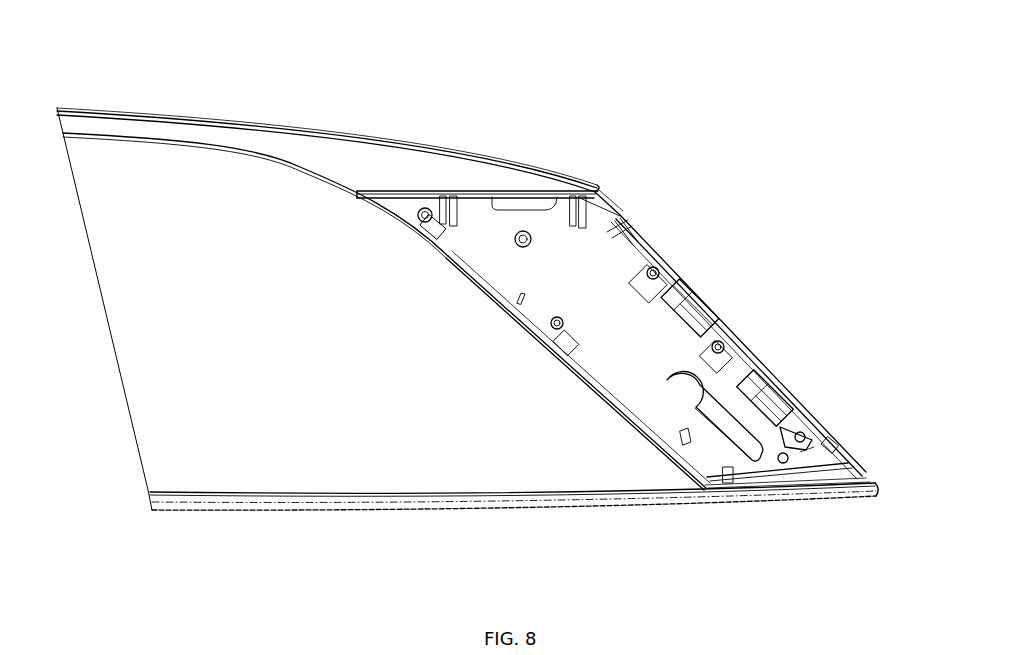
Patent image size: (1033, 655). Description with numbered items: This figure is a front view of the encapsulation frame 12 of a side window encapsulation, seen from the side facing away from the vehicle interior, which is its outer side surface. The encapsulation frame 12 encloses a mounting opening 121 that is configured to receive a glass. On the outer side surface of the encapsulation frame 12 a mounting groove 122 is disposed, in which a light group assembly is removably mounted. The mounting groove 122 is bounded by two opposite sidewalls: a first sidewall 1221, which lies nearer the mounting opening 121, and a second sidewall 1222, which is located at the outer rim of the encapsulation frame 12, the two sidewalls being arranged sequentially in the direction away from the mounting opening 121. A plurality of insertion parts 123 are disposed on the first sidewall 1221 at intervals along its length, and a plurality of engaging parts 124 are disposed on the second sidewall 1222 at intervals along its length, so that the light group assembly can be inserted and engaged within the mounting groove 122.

The encapsulation frame 12 is at (315, 130).
The mounting opening 121 is at (183, 192).
The mounting groove 122 is at (562, 243).
The insertion part 123 is at (391, 211).
The engaging part 124 is at (628, 229).
The first sidewall 1221 is at (490, 293).
The second sidewall 1222 is at (728, 326).